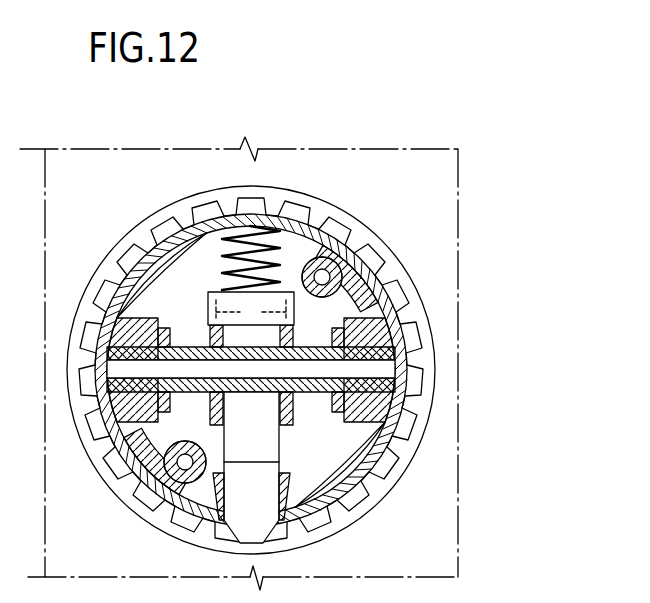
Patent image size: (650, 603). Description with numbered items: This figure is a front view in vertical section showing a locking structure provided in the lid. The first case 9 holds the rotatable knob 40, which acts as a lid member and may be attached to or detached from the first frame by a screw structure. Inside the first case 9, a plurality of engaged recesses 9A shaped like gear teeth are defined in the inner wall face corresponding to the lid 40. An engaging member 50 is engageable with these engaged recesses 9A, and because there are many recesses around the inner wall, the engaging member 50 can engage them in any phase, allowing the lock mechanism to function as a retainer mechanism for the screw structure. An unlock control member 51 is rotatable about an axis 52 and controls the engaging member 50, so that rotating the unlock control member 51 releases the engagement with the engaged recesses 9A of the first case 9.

The first case 9 is at (380, 260).
The engaged recesses 9A is at (299, 207).
The knob 40 is at (160, 310).
The engaging member 50 is at (272, 442).
The unlock control member 51 is at (313, 345).
The axis 52 is at (383, 368).